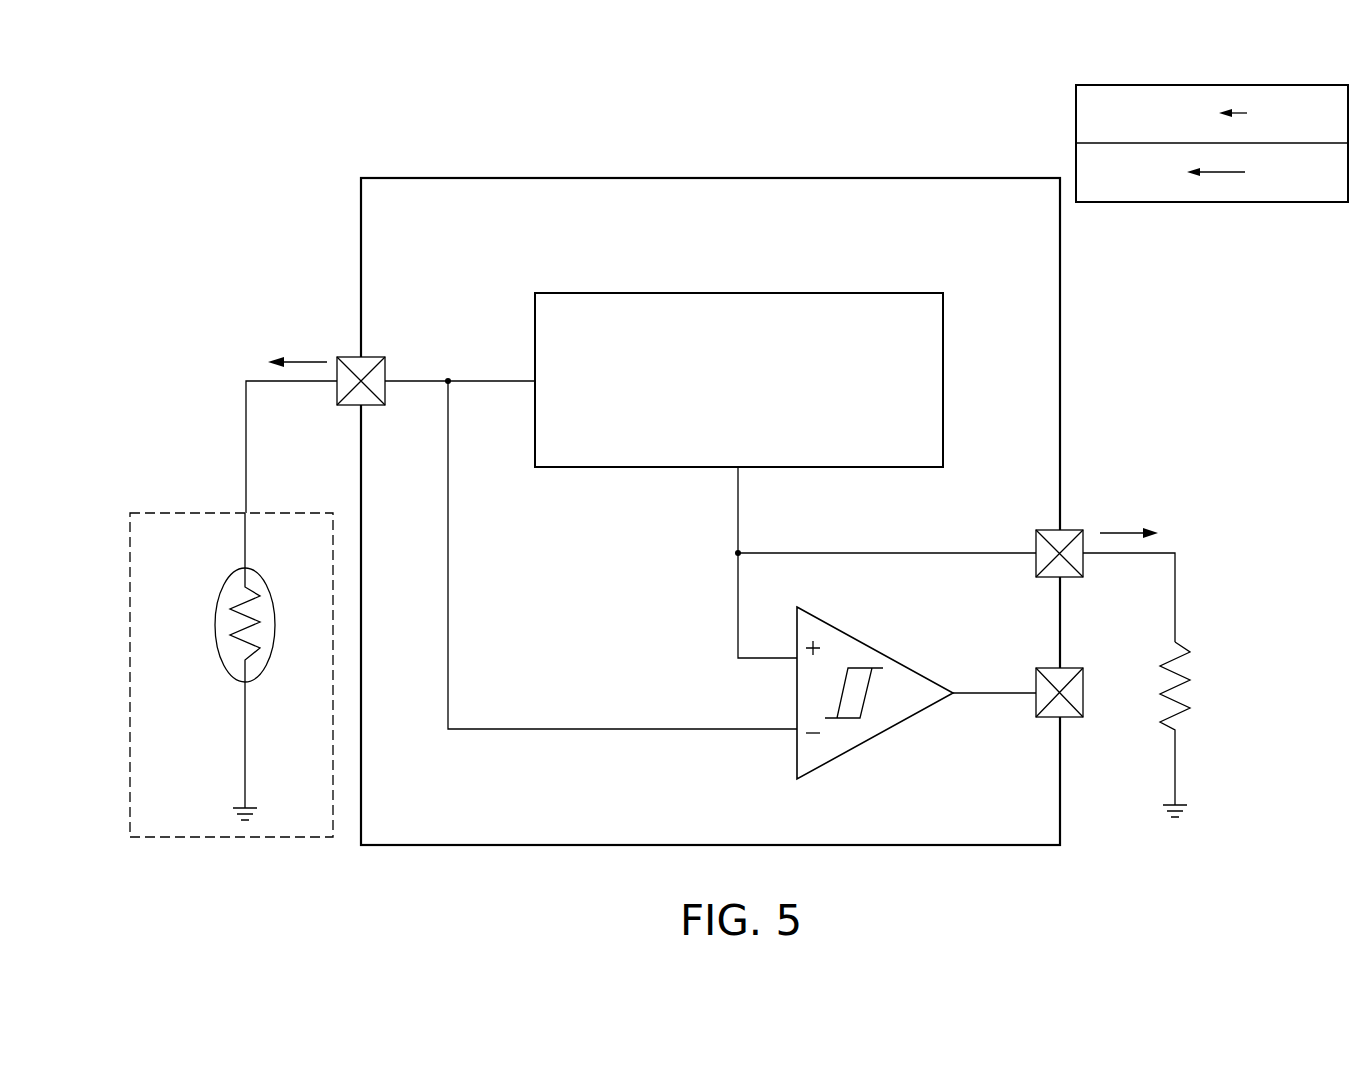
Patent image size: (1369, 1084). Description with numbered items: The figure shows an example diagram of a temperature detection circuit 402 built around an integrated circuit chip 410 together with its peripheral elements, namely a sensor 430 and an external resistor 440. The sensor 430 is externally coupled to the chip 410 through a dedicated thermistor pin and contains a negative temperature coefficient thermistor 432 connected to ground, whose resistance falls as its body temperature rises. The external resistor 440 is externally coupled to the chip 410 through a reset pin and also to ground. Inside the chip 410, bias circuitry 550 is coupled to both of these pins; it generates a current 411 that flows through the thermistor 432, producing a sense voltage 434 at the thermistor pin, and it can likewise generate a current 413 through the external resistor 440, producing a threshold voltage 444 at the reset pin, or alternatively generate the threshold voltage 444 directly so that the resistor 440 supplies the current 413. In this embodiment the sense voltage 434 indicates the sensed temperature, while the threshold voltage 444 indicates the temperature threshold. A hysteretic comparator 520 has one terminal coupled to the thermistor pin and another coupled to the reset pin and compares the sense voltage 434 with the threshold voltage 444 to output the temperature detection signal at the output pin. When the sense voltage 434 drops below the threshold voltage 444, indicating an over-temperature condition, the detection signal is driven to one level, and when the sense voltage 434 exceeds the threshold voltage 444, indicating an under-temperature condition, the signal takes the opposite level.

The temperature detection circuit 402 is at (182, 139).
The integrated circuit chip 410 is at (384, 178).
The current 411 is at (324, 362).
The current 413 is at (1111, 532).
The sensor 430 is at (147, 513).
The negative temperature coefficient thermistor 432 is at (222, 595).
The sense voltage 434 is at (245, 410).
The external resistor 440 is at (1186, 642).
The threshold voltage 444 is at (1175, 552).
The comparator 520 is at (900, 660).
The bias circuitry 550 is at (762, 410).